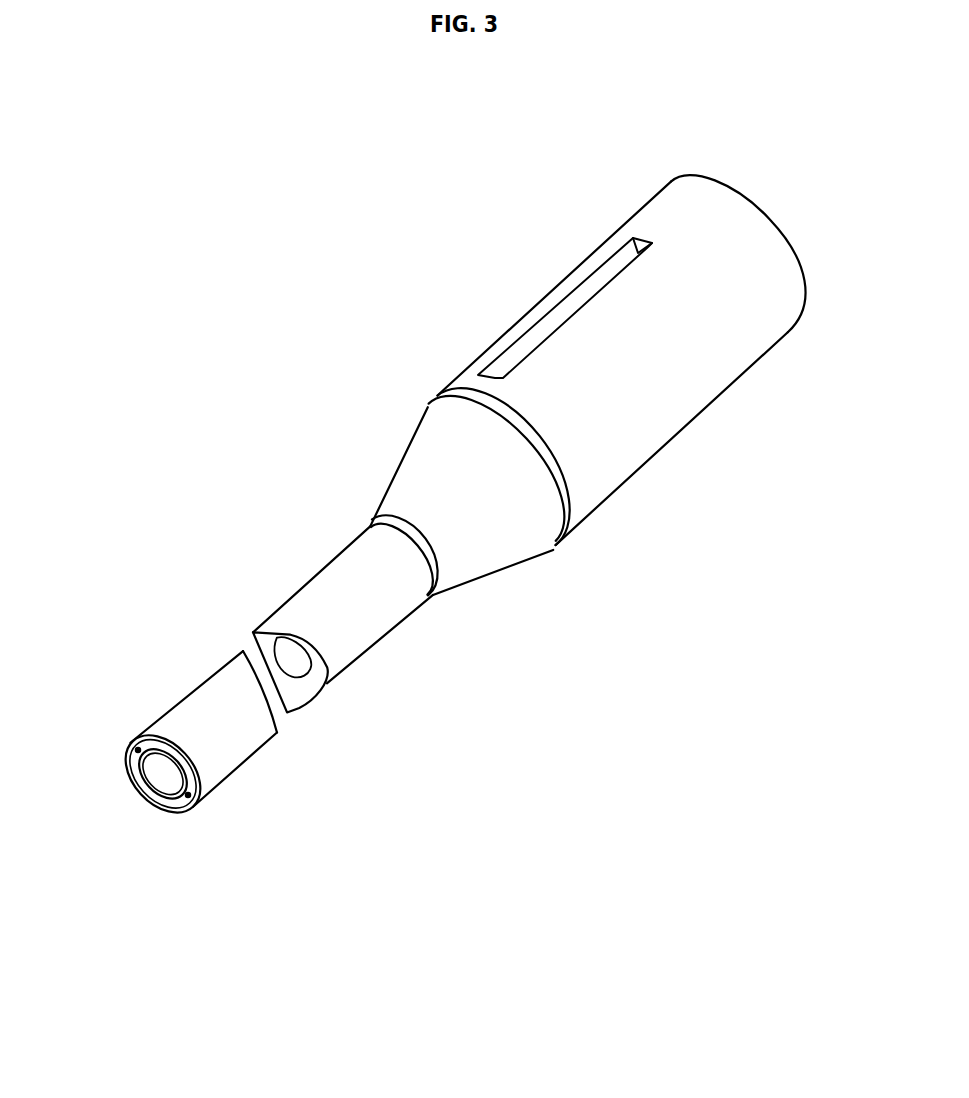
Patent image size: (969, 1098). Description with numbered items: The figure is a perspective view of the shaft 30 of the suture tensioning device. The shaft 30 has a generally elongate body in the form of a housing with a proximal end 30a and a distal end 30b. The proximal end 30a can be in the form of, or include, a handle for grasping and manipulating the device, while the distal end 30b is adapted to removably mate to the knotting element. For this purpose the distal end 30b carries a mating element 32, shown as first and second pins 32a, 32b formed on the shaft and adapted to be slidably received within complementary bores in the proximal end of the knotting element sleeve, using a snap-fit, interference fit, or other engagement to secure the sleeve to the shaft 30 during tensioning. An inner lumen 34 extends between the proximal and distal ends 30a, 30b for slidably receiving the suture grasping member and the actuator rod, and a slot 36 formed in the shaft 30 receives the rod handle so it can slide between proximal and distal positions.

The shaft 30 is at (300, 331).
The proximal end 30a is at (822, 225).
The distal end 30b is at (100, 755).
The tip portion 32 is at (203, 841).
The first pin 32a is at (137, 748).
The second pin 32b is at (190, 796).
The inner lumen 34 is at (165, 775).
The slot 36 is at (552, 320).